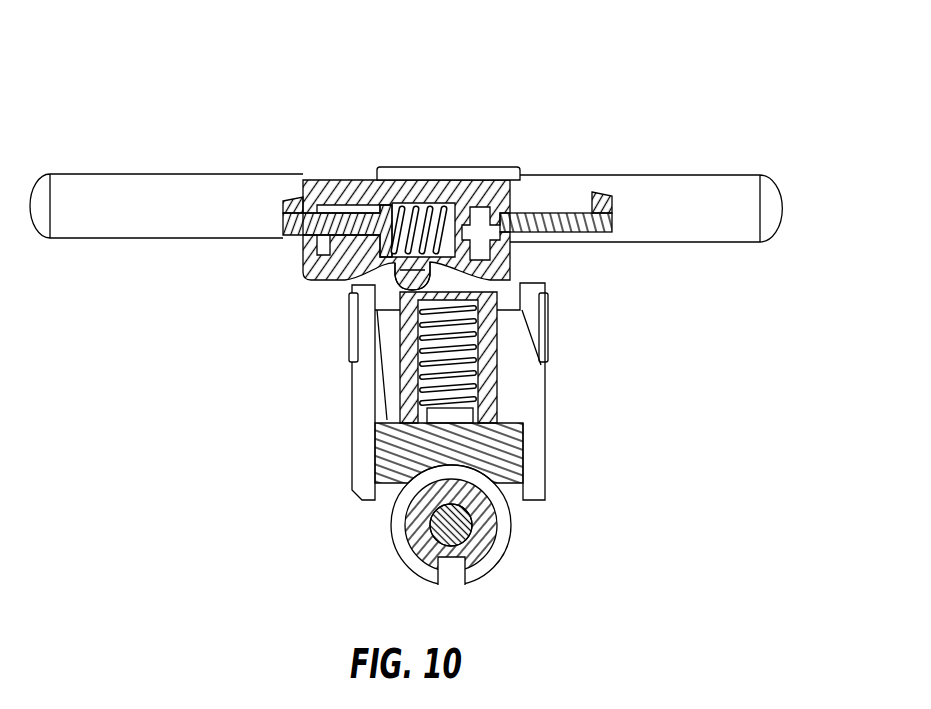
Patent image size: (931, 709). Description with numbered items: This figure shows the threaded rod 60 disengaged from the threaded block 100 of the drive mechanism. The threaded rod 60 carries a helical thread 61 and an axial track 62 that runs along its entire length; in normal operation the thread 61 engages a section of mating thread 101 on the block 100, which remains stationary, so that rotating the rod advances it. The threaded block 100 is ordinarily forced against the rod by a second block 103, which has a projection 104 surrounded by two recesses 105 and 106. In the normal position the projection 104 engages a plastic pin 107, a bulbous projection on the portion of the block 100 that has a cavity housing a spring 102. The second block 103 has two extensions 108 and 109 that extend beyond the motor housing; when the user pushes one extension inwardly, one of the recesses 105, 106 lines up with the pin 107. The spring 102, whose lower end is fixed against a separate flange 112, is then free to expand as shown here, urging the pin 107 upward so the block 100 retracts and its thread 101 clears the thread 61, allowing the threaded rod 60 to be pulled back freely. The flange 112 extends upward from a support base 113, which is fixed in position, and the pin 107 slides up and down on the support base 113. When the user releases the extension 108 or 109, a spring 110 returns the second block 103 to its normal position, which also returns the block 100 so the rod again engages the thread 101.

The threaded rod 60 is at (405, 530).
The helical thread 61 is at (507, 560).
The axial track 62 is at (455, 583).
The threaded block 100 is at (543, 438).
The mating thread 101 is at (370, 470).
The spring 102 is at (400, 347).
The second block 103 is at (507, 265).
The projection 104 is at (372, 272).
The recess 105 is at (357, 192).
The recess 106 is at (457, 185).
The plastic pin 107 is at (353, 319).
The extension 108 is at (172, 188).
The extension 109 is at (690, 192).
The spring 110 is at (421, 203).
The flange 112 is at (458, 418).
The support base 113 is at (537, 477).